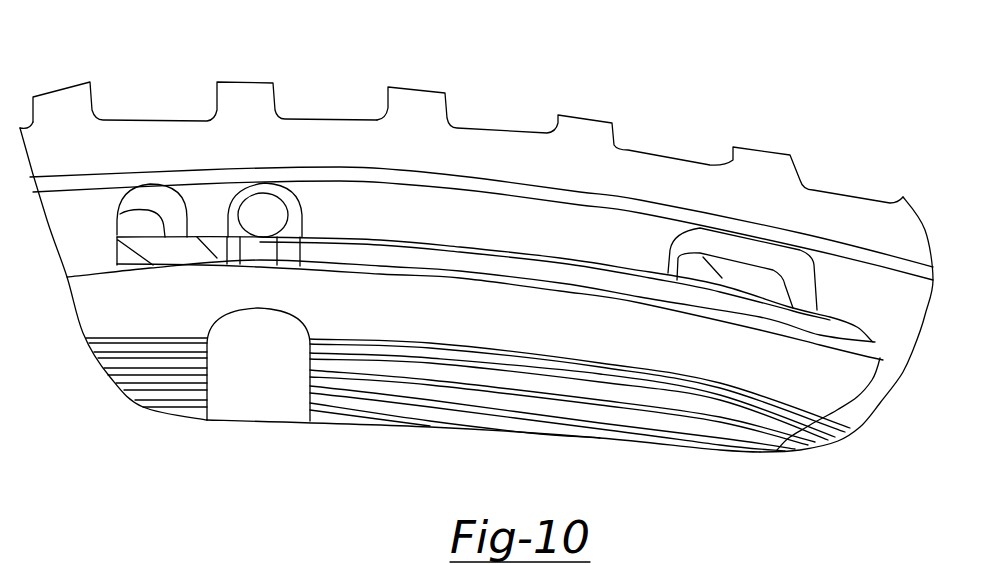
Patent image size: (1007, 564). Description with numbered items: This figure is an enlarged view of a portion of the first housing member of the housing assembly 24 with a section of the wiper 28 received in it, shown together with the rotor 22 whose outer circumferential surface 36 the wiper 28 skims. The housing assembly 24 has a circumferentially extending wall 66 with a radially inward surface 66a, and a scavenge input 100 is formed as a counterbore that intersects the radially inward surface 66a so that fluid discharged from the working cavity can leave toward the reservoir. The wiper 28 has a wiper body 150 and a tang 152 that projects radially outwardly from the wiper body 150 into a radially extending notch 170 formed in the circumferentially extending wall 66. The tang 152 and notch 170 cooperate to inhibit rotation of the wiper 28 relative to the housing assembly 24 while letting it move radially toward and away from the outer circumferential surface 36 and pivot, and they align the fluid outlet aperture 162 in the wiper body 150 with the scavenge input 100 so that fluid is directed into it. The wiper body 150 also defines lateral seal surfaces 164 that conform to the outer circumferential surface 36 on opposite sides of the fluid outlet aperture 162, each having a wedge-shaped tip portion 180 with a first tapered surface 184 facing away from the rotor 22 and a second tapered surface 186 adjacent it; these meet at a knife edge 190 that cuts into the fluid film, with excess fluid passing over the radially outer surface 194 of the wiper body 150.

The rotor 22 is at (427, 313).
The housing assembly 24 is at (628, 167).
The wiper 28 is at (503, 266).
The outer circumferential surface 36 is at (883, 370).
The circumferentially extending wall 66 is at (320, 207).
The radially inward surface 66a is at (322, 238).
The scavenge input 100 is at (233, 212).
The wiper body 150 is at (185, 252).
The tang 152 is at (143, 223).
The fluid outlet aperture 162 is at (263, 250).
The lateral seal surfaces 164 is at (517, 280).
The notch 170 is at (145, 202).
The tip portion 180 is at (887, 357).
The first tapered surface 184 is at (877, 352).
The second tapered surface 186 is at (777, 450).
The knife edge 190 is at (883, 367).
The radially outer surface 194 is at (451, 247).